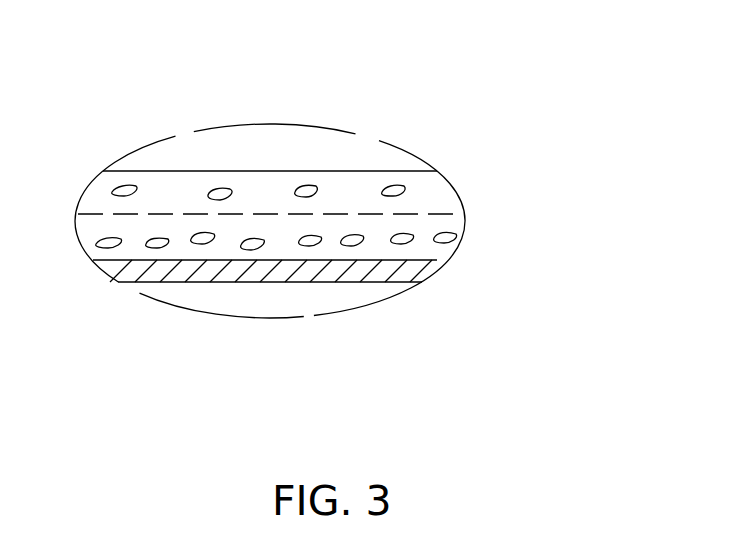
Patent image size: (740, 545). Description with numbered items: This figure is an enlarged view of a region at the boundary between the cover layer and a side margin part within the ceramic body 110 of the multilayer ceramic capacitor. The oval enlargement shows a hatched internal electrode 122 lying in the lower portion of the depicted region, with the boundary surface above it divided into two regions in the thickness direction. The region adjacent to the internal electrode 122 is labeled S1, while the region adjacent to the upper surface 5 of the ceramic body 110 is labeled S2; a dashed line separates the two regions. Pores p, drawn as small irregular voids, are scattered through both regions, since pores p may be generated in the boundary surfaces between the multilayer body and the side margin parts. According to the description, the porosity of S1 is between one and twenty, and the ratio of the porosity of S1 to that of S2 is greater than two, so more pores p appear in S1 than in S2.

The upper surface 5 is at (260, 157).
The pores p is at (352, 236).
The region adjacent to upper or lower surface S2 is at (438, 192).
The region adjacent to internal electrode S1 is at (453, 230).
The internal electrode 122 is at (423, 272).
The ceramic body 110 is at (265, 293).